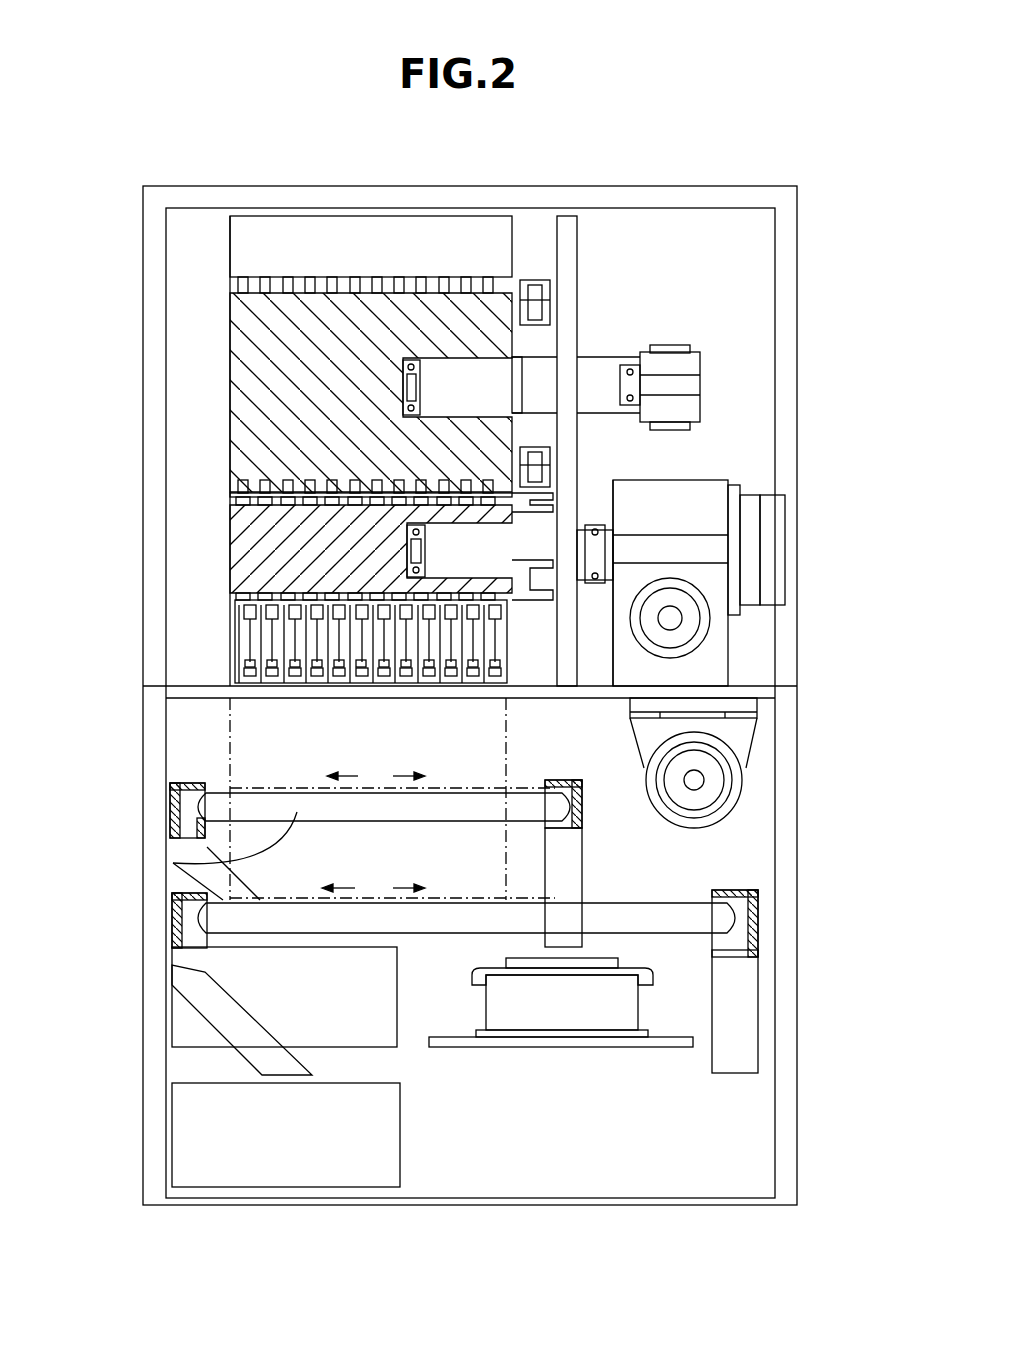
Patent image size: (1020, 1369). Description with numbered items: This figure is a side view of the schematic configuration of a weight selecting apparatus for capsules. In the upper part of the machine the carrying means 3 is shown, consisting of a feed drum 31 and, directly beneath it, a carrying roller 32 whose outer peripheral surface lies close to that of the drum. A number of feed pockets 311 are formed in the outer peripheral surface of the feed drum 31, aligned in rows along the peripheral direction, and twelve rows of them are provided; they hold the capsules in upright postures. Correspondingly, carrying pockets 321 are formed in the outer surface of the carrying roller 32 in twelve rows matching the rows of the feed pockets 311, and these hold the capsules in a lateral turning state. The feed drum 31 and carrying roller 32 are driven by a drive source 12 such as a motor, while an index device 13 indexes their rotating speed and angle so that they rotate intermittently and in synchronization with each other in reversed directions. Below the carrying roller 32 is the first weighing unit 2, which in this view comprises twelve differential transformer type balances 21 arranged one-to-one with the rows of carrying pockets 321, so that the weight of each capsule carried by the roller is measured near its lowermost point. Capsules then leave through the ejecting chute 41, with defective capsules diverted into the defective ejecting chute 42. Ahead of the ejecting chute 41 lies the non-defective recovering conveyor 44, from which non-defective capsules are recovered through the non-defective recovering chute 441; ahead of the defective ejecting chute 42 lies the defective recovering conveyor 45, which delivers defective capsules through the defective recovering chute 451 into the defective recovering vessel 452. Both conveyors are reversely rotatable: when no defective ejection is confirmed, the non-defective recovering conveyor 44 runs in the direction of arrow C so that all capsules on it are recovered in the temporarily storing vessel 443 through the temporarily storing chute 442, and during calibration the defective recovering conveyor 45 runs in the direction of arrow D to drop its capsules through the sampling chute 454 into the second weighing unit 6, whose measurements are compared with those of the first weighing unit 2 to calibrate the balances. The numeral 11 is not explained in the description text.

The upper plate 11 is at (405, 235).
The feed pockets 311 is at (240, 293).
The carrying means 3 is at (92, 372).
The feed drum 31 is at (292, 378).
The carrying roller 32 is at (310, 513).
The carrying pockets 321 is at (245, 596).
The first weighing unit 2 is at (291, 622).
The differential transformer type balance 21 is at (250, 655).
The index device 13 is at (713, 458).
The defective ejecting chute 42 is at (257, 787).
The ejecting chute 41 is at (470, 940).
The defective recovering chute 451 is at (178, 840).
The defective recovering conveyor 45 is at (188, 848).
The drive source 12 is at (723, 768).
The sampling chute 454 is at (568, 860).
The non-defective recovering conveyor 44 is at (663, 907).
The temporarily storing chute 442 is at (185, 960).
The non-defective recovering chute 441 is at (745, 1000).
The defective recovering vessel 452 is at (190, 1020).
The temporarily storing vessel 443 is at (190, 1130).
The second weighing unit 6 is at (595, 1008).